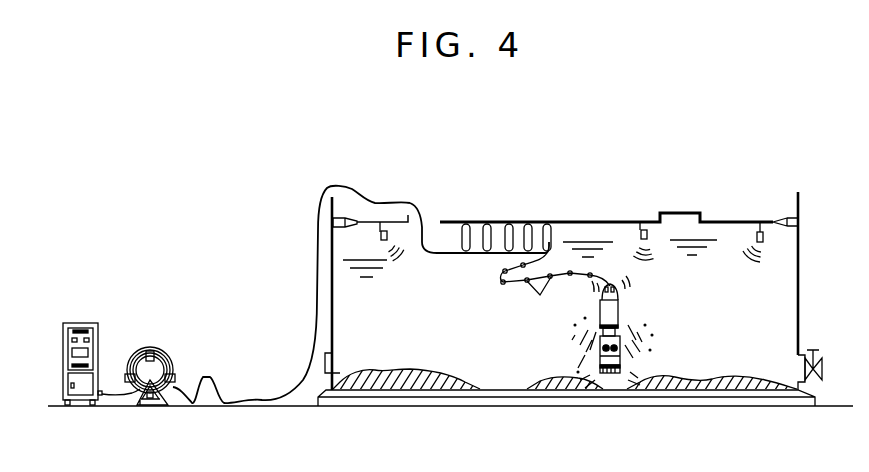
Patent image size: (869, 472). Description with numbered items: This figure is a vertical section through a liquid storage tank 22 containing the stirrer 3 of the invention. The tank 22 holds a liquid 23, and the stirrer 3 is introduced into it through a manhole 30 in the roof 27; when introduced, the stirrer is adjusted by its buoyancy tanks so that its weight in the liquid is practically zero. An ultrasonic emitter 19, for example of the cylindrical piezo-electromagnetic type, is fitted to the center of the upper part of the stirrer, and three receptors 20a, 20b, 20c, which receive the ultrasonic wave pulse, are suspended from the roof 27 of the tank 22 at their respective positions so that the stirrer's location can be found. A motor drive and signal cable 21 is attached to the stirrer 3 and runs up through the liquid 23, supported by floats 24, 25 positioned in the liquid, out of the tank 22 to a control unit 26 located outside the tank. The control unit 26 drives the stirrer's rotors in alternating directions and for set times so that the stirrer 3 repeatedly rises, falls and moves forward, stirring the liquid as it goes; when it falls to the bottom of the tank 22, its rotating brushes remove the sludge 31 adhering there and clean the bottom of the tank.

The stirrer 3 is at (626, 328).
The ultrasonic emitter 19 is at (618, 293).
The receptor 20a is at (382, 231).
The receptor 20b is at (640, 222).
The receptor 20c is at (760, 232).
The motor drive and signal cable 21 is at (316, 327).
The tank 22 is at (800, 277).
The liquid 23 is at (739, 307).
The float 24 is at (541, 295).
The float 25 is at (512, 223).
The control unit 26 is at (82, 322).
The roof 27 is at (589, 221).
The manhole 30 is at (440, 221).
The sludge 31 is at (728, 377).